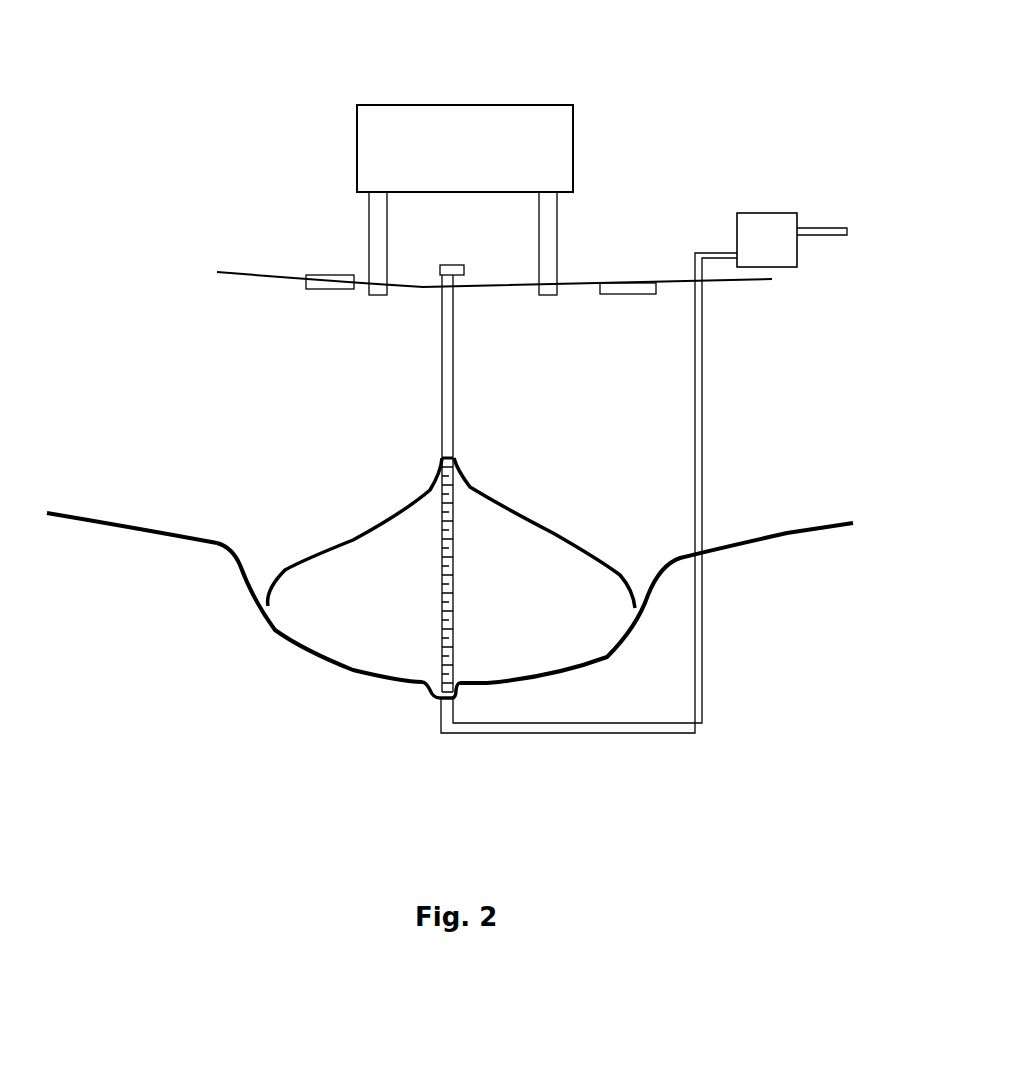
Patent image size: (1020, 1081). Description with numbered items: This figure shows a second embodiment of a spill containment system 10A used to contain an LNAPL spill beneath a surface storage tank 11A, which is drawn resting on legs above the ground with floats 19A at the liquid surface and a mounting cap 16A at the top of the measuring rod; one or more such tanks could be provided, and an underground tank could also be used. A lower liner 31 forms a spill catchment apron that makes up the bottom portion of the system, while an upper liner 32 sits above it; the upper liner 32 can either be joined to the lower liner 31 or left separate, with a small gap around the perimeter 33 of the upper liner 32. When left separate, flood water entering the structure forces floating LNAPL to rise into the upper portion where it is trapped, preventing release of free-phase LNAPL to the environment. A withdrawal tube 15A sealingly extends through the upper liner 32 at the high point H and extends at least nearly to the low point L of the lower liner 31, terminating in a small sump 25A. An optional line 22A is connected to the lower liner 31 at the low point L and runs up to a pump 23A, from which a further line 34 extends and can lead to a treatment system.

The containment system 10A is at (622, 130).
The surface storage tank 11A is at (357, 142).
The floats 19A is at (327, 273).
The mounting cap 16A is at (453, 263).
The pump 23A is at (767, 213).
The line 34 is at (830, 227).
The line 22A is at (702, 407).
The withdrawal tube 15A is at (452, 557).
The high point H is at (457, 457).
The low point L is at (432, 700).
The sump at rod bottom 25A is at (447, 698).
The lower liner 31 is at (138, 525).
The upper liner 32 is at (355, 530).
The perimeter 33 is at (258, 605).